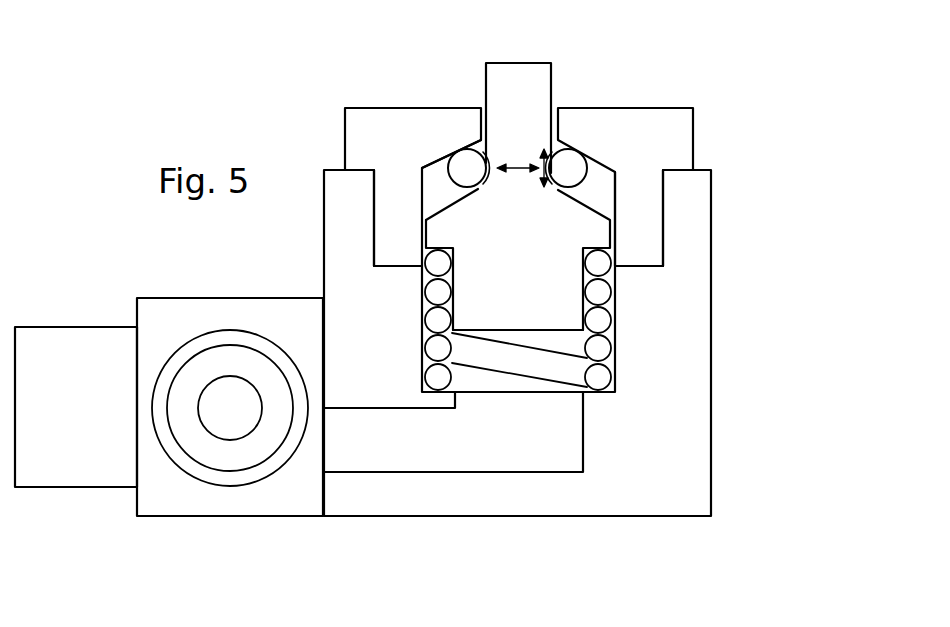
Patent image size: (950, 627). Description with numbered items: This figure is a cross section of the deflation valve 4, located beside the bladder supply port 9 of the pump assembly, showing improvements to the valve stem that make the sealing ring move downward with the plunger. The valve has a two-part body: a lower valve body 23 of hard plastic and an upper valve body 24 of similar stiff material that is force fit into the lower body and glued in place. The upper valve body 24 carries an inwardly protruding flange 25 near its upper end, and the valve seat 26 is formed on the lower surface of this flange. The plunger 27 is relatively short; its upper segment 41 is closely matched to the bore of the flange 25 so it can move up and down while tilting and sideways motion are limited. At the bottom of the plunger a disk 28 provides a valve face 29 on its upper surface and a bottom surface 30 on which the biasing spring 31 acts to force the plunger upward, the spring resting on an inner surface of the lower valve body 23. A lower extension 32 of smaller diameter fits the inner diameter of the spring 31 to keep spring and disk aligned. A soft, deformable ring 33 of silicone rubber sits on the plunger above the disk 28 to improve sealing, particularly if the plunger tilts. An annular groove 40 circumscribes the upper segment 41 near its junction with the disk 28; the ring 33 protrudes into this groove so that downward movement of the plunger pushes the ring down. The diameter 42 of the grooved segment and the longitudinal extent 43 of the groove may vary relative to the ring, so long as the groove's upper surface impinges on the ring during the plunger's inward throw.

The deflation valve 4 is at (728, 422).
The bladder supply port 9 is at (222, 498).
The lower valve body 23 is at (712, 350).
The upper valve body 24 is at (360, 108).
The flange 25 is at (587, 123).
The valve seat 26 is at (603, 210).
The plunger 27 is at (529, 58).
The disk 28 is at (603, 238).
The valve face 29 is at (615, 237).
The bottom surface 30 is at (443, 250).
The biasing spring 31 is at (512, 377).
The lower extension 32 is at (540, 340).
The deformable ring 33 is at (452, 155).
The annular groove 40 is at (499, 155).
The upper segment 41 is at (486, 73).
The diameter 42 is at (518, 158).
The longitudinal extent 43 is at (545, 181).